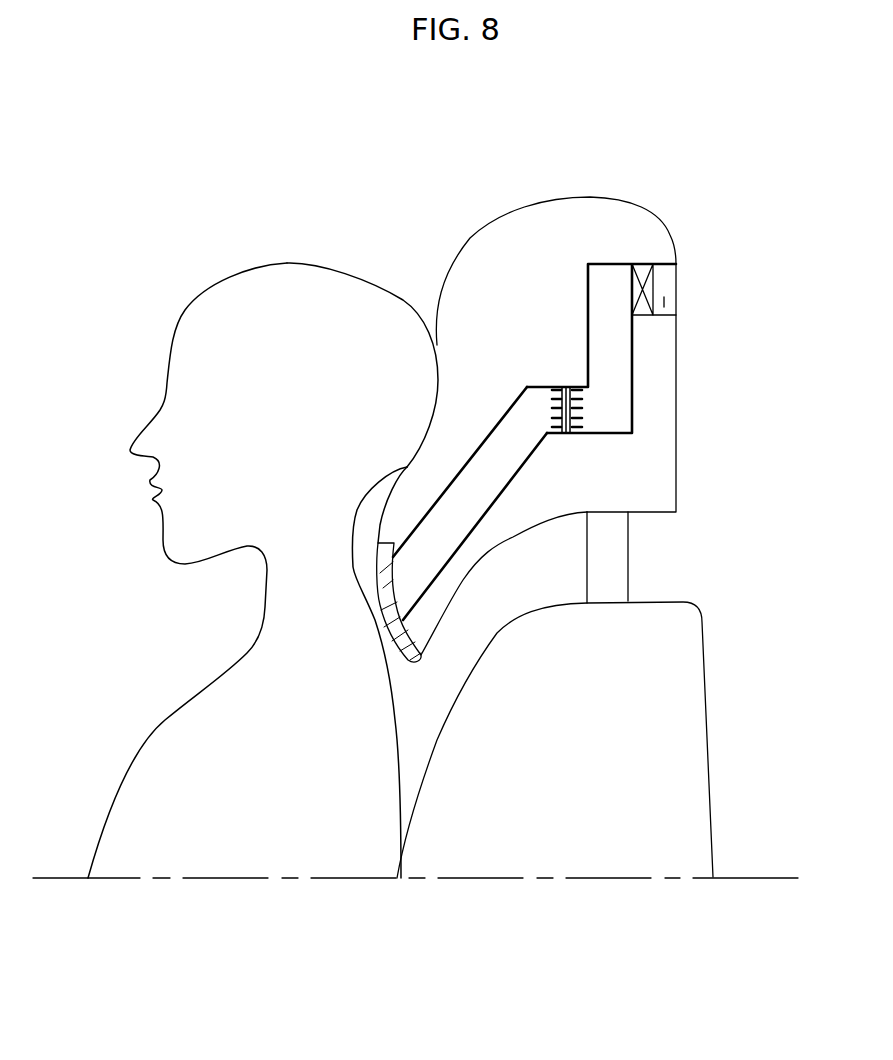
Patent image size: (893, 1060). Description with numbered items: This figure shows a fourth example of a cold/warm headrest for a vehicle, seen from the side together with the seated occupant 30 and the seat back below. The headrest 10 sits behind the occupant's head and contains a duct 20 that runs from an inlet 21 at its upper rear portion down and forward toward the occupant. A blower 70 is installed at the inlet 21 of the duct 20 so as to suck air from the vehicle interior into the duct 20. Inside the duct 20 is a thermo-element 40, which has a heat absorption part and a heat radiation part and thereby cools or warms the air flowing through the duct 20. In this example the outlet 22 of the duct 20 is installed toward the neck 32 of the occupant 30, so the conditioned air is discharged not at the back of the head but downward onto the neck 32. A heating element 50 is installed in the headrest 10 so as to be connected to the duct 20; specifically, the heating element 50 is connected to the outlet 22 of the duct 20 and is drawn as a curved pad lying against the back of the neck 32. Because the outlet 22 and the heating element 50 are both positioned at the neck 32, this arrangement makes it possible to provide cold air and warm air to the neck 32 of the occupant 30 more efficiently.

The headrest 10 is at (603, 200).
The duct 20 is at (637, 357).
The inlet 21 is at (667, 302).
The outlet 22 is at (413, 567).
The occupant 30 is at (185, 742).
The neck 32 is at (317, 581).
The thermo-element 40 is at (582, 410).
The heating element 50 is at (378, 602).
The blower 70 is at (646, 279).